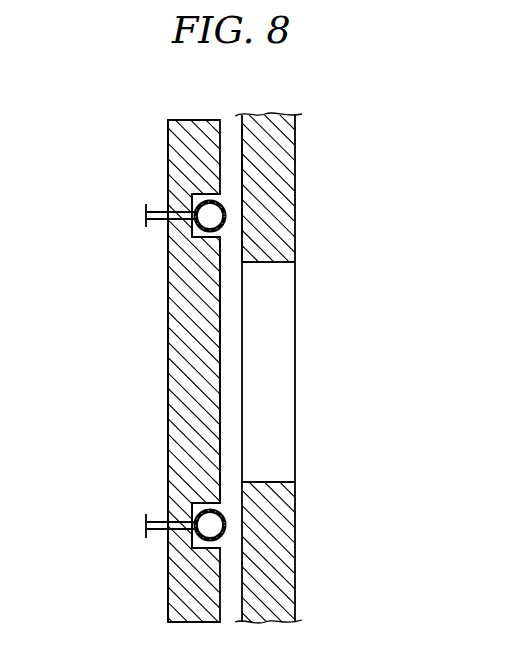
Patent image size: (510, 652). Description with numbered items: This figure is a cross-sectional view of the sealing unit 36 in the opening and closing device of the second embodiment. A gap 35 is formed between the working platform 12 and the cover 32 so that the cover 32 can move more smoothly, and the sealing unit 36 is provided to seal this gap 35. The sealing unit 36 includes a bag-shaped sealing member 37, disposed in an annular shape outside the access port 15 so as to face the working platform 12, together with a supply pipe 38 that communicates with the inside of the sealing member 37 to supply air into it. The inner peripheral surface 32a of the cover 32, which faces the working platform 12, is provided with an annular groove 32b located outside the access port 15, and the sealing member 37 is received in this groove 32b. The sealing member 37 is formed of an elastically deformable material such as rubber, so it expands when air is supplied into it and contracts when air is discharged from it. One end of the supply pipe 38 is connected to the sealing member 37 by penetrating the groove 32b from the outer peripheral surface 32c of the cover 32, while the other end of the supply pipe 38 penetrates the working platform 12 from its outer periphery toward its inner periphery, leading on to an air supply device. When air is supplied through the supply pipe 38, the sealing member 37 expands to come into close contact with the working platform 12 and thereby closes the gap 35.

The cover 32 is at (192, 132).
The working platform 12 is at (287, 210).
The gap 35 is at (233, 165).
The access port 15 is at (273, 262).
The sealing unit 36 is at (191, 205).
The sealing member 37 is at (210, 233).
The supply pipe 38 is at (157, 226).
The inner peripheral surface 32a is at (220, 342).
The outer peripheral surface 32c is at (168, 452).
The annular groove 32b is at (212, 505).